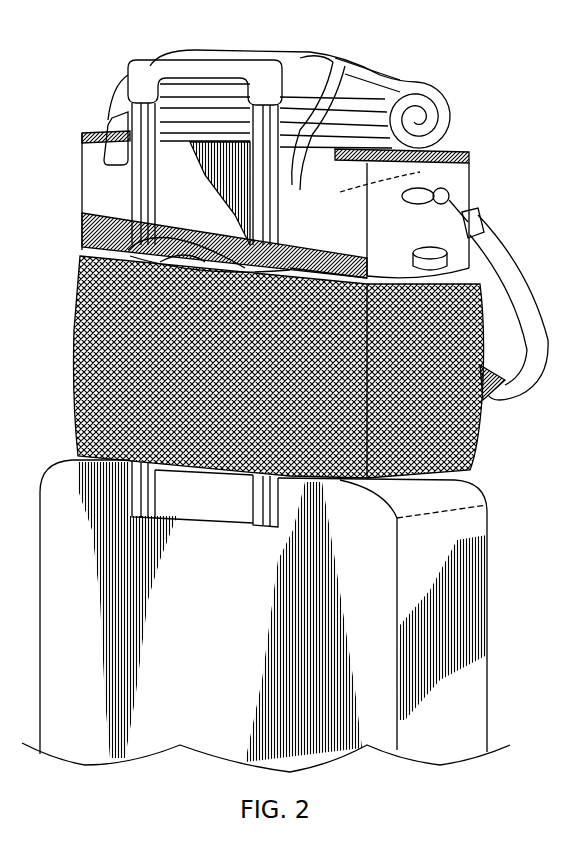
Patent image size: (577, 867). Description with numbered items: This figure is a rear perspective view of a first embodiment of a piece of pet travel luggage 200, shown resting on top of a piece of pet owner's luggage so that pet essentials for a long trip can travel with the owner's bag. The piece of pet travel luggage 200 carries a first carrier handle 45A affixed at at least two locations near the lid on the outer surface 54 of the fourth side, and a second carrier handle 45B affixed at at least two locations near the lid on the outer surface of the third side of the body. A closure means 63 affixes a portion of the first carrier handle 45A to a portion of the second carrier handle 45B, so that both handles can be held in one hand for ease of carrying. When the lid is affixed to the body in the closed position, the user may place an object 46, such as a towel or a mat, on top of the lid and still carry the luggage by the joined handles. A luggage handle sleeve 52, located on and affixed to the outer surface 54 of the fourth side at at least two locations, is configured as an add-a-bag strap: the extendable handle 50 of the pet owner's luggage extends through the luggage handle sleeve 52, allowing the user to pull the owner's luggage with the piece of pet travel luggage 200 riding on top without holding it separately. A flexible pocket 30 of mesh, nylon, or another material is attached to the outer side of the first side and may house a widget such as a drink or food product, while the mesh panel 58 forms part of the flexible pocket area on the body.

The piece of pet travel luggage 200 is at (66, 134).
The flexible pocket 30 is at (480, 428).
The mesh pocket 58 is at (77, 405).
The luggage handle sleeve 52 is at (82, 230).
The outer surface 54 is at (467, 166).
The closure means 63 is at (287, 58).
The object 46 is at (440, 132).
The extendable handle 50 is at (210, 70).
The first carrier handle 45A is at (340, 72).
The second carrier handle 45B is at (118, 130).